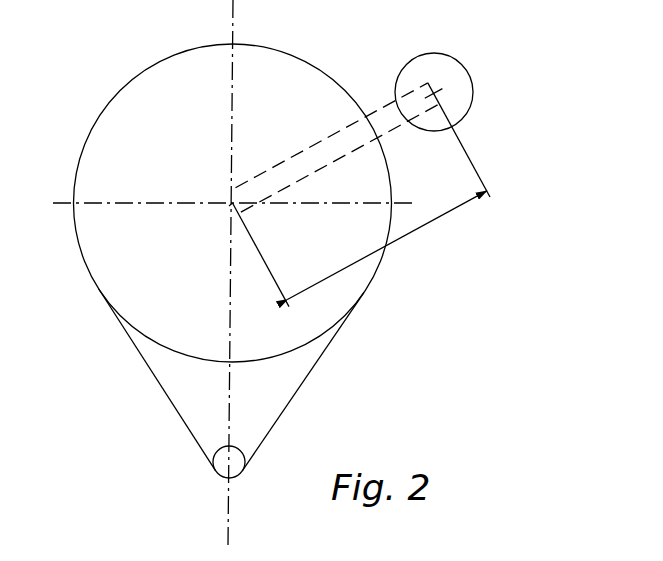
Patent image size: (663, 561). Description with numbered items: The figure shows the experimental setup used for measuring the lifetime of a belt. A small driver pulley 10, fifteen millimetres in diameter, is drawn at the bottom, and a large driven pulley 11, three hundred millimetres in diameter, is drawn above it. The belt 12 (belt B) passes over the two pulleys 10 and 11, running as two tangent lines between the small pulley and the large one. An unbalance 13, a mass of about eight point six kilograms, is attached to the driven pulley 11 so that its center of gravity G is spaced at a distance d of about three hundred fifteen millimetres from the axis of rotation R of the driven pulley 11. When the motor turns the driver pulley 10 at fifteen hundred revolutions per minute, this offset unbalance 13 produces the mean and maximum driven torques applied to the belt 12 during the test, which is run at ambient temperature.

The driver pulley 10 is at (215, 478).
The driven pulley 11 is at (113, 80).
The belt 12 is at (318, 372).
The unbalance 13 is at (458, 56).
The center of gravity G is at (443, 95).
The axis of rotation R is at (229, 207).
The distance d is at (362, 195).